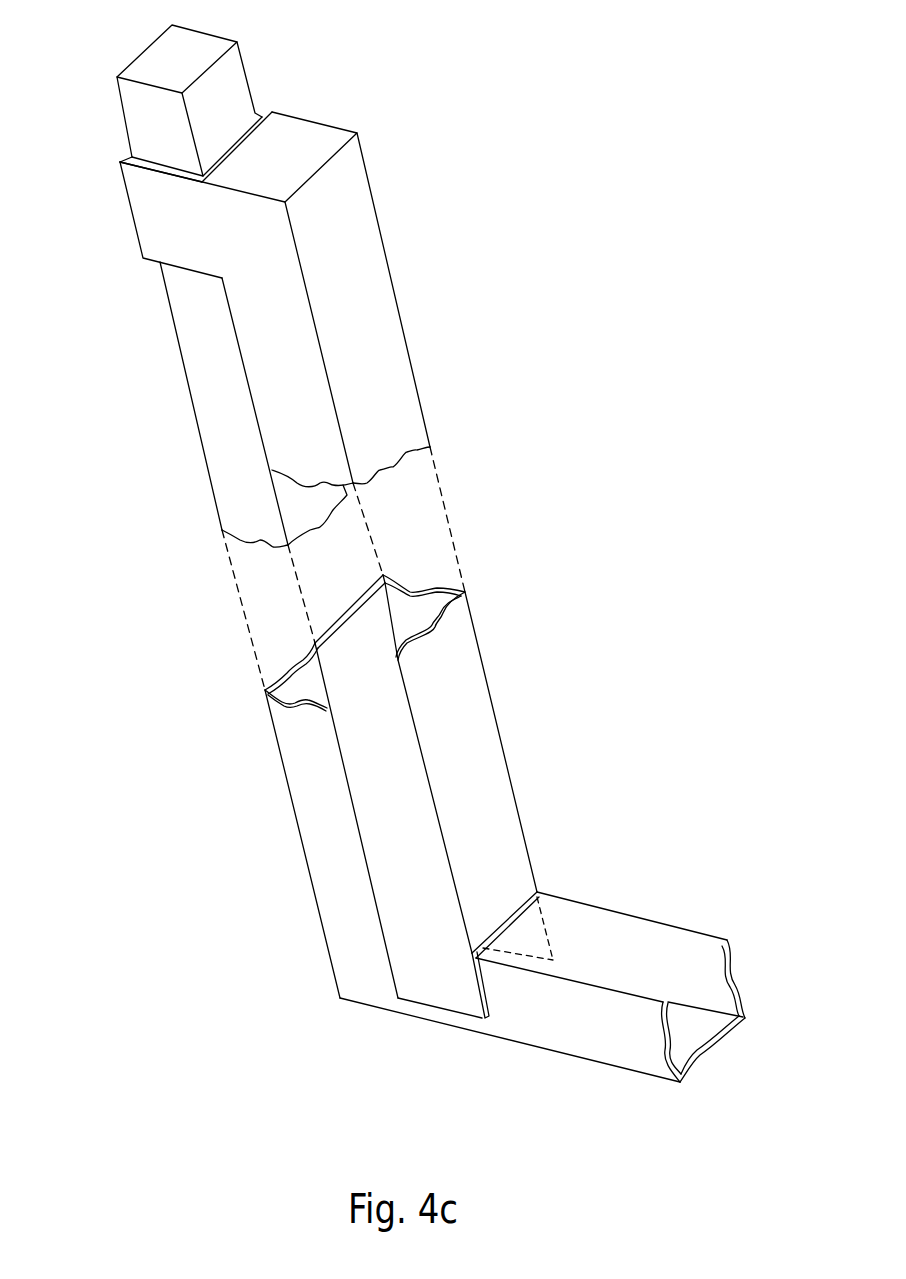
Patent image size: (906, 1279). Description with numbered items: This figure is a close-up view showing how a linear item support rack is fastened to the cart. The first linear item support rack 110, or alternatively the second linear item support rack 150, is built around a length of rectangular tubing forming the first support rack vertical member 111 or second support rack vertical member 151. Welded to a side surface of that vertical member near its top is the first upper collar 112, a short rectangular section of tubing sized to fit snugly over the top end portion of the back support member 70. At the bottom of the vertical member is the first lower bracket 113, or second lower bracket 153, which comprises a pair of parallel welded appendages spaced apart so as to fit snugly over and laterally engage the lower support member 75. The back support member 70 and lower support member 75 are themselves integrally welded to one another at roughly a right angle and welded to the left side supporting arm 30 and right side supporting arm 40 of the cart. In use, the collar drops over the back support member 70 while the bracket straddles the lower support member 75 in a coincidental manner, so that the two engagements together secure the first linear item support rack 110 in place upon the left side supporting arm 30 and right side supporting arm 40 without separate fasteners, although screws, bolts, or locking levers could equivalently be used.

The back support member 70 is at (371, 553).
The first upper collar 112 is at (155, 220).
The first linear item support rack 110 is at (360, 578).
The second linear item support rack 150 is at (360, 578).
The first support rack vertical member 111 is at (455, 543).
The second support rack vertical member 151 is at (373, 333).
The lower support member 75 is at (613, 922).
The left side supporting arm 30 is at (442, 862).
The right side supporting arm 40 is at (345, 940).
The first lower bracket 113 is at (507, 1002).
The second lower bracket 153 is at (533, 957).